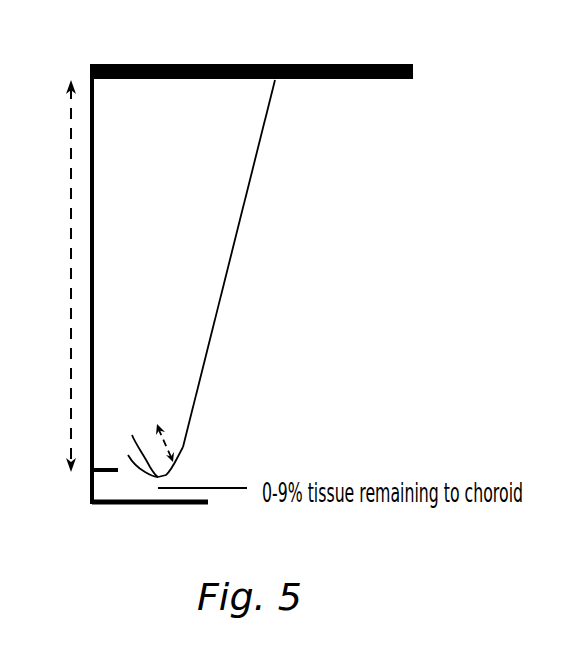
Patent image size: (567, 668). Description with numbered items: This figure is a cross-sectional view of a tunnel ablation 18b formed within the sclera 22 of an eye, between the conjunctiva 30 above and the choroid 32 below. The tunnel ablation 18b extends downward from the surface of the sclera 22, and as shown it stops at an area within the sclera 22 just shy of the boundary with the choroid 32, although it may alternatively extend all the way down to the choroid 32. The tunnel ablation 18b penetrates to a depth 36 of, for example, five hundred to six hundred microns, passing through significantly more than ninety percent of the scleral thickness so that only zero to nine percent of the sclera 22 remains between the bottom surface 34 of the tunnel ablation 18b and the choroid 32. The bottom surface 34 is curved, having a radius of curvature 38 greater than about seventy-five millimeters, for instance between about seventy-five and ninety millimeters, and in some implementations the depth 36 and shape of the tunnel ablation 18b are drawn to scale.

The conjunctiva 30 is at (251, 57).
The sclera 22 is at (146, 298).
The choroid 32 is at (147, 532).
The bottom surface 34 is at (149, 444).
The depth 36 is at (73, 394).
The radius of curvature 38 is at (170, 449).
The tunnel ablation 18b is at (213, 325).